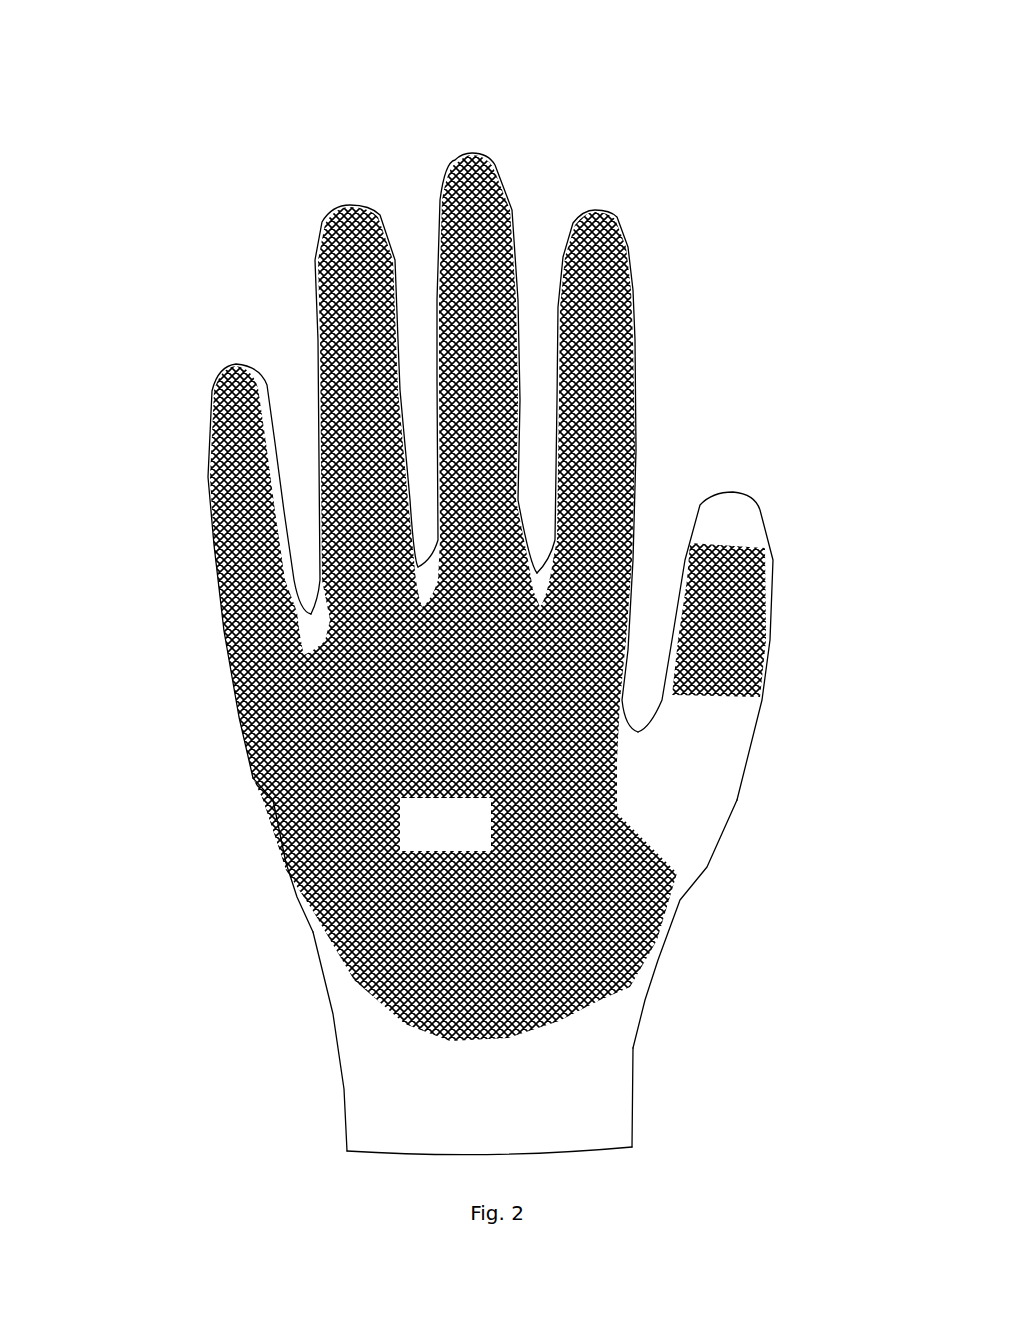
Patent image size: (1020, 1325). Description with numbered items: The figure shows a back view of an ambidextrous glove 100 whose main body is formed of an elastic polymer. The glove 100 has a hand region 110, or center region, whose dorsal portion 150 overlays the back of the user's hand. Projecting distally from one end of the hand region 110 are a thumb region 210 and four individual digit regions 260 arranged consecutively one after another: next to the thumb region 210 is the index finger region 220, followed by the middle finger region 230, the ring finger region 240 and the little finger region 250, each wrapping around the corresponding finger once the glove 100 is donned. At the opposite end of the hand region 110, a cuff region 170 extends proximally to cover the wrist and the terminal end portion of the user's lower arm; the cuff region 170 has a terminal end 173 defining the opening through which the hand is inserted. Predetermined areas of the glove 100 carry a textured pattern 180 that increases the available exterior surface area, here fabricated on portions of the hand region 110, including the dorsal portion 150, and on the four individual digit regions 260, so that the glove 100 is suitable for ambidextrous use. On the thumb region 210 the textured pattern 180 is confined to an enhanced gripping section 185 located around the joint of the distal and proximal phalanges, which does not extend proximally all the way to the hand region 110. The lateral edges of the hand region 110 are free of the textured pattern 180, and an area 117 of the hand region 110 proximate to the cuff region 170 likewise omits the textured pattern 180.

The glove 100 is at (458, 591).
The hand region 110 is at (278, 848).
The area proximate to the cuff region 117 is at (350, 1014).
The dorsal portion 150 is at (445, 824).
The cuff region 170 is at (368, 1101).
The terminal end 173 is at (632, 1147).
The textured pattern 180 is at (272, 739).
The enhanced gripping section 185 is at (728, 627).
The thumb region 210 is at (735, 490).
The index finger region 220 is at (602, 240).
The middle finger region 230 is at (448, 177).
The ring finger region 240 is at (328, 218).
The little finger region 250 is at (227, 402).
The four individual digit regions 260 is at (218, 112).